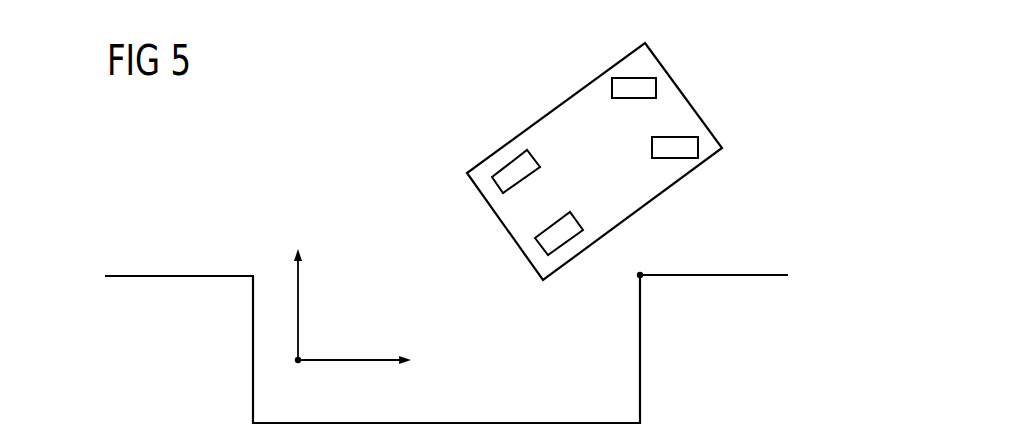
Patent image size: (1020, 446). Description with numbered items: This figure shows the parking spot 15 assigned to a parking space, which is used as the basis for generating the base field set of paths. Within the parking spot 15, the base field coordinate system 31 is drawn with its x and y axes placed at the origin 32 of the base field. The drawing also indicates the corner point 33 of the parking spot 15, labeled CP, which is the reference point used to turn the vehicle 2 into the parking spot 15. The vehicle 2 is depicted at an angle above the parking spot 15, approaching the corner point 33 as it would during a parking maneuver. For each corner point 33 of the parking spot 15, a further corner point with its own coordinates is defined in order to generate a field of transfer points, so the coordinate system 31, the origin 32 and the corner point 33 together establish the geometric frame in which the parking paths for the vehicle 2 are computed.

The vehicle 2 is at (687, 92).
The parking spot 15 is at (668, 372).
The base field coordinate system 31 is at (355, 309).
The origin 32 is at (301, 359).
The corner point 33 is at (643, 274).